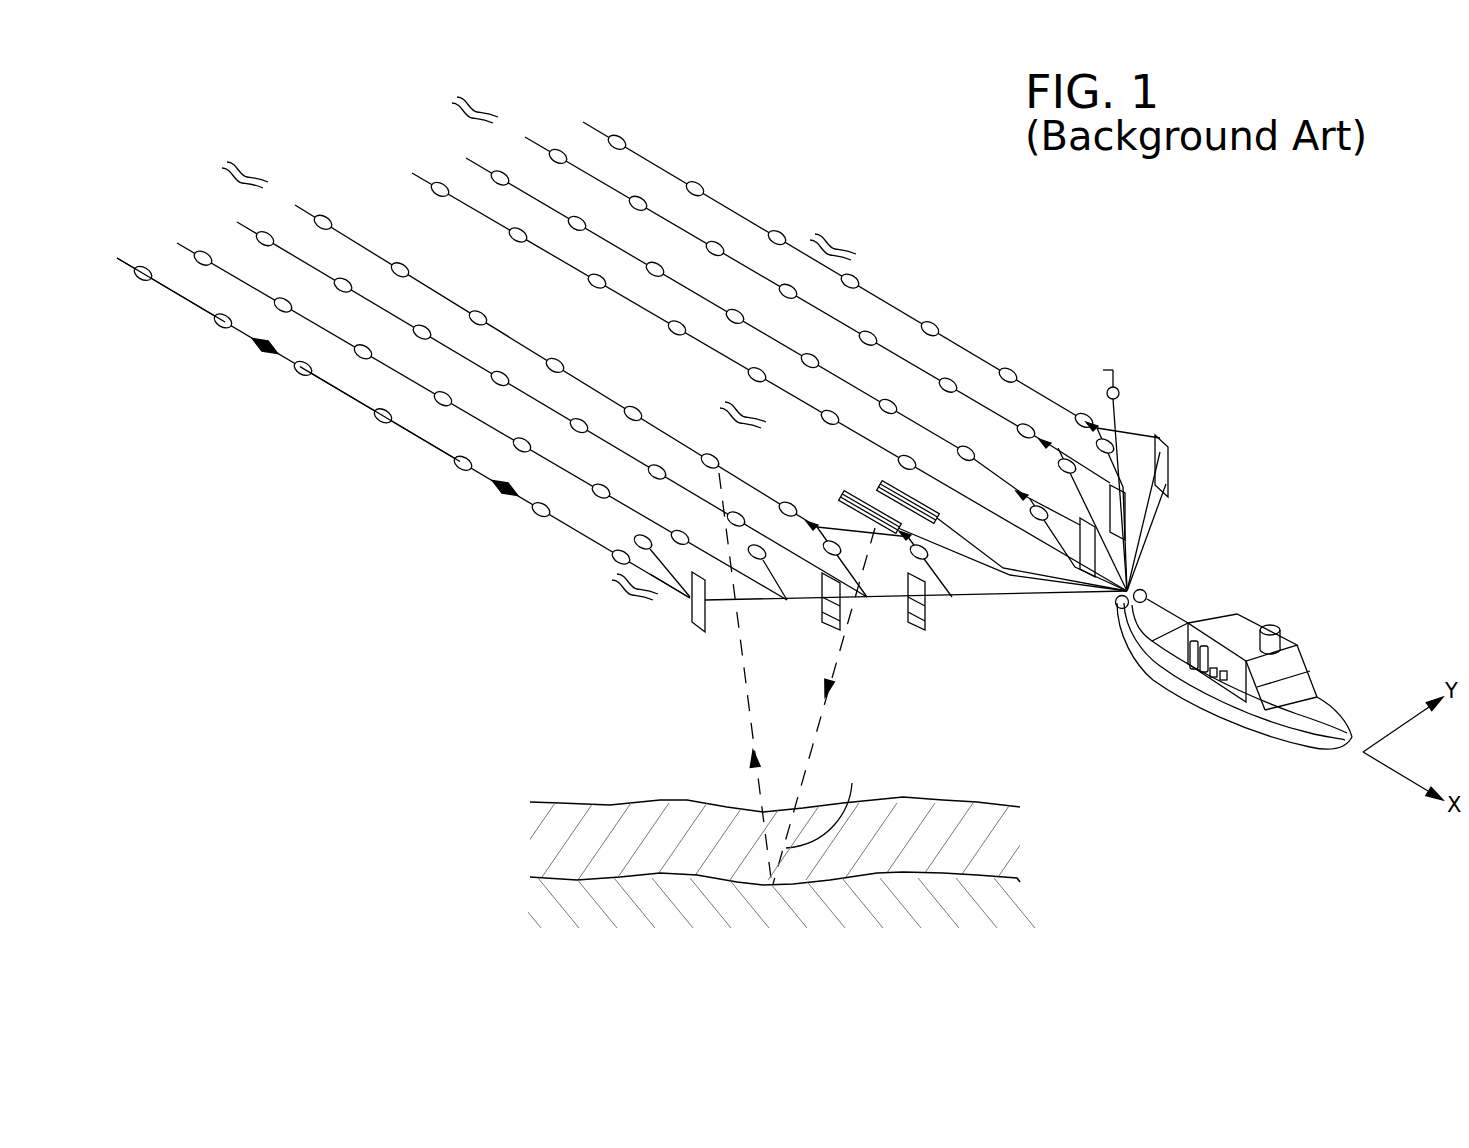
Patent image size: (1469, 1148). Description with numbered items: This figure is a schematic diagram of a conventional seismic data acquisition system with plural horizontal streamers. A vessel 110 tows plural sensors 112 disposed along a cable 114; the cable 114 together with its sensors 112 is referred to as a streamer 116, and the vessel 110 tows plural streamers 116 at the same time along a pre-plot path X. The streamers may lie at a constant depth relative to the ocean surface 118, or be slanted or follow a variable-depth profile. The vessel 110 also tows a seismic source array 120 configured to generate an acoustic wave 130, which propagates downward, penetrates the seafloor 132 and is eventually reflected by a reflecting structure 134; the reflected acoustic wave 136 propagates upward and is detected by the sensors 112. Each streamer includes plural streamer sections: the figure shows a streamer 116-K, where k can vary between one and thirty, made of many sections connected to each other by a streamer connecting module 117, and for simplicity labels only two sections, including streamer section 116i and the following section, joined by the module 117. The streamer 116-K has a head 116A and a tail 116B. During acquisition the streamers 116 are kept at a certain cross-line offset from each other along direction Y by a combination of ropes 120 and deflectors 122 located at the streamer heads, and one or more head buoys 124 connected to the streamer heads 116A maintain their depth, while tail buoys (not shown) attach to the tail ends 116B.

The vessel 110 is at (1258, 600).
The sensors 112 is at (618, 138).
The cable 114 is at (646, 158).
The streamer 116 is at (840, 268).
The head 116A is at (675, 588).
The tail 116B is at (135, 268).
The streamer k 116-K is at (322, 410).
The streamer section i 116i is at (403, 435).
The streamer connecting module 117 is at (500, 491).
The ocean surface 118 is at (832, 243).
The seismic source array 120 is at (835, 464).
The deflectors 122 is at (692, 622).
The head buoys 124 is at (1118, 393).
The acoustic wave 130 is at (831, 804).
The seafloor 132 is at (977, 803).
The reflecting structure 134 is at (1017, 880).
The reflected acoustic wave 136 is at (748, 713).